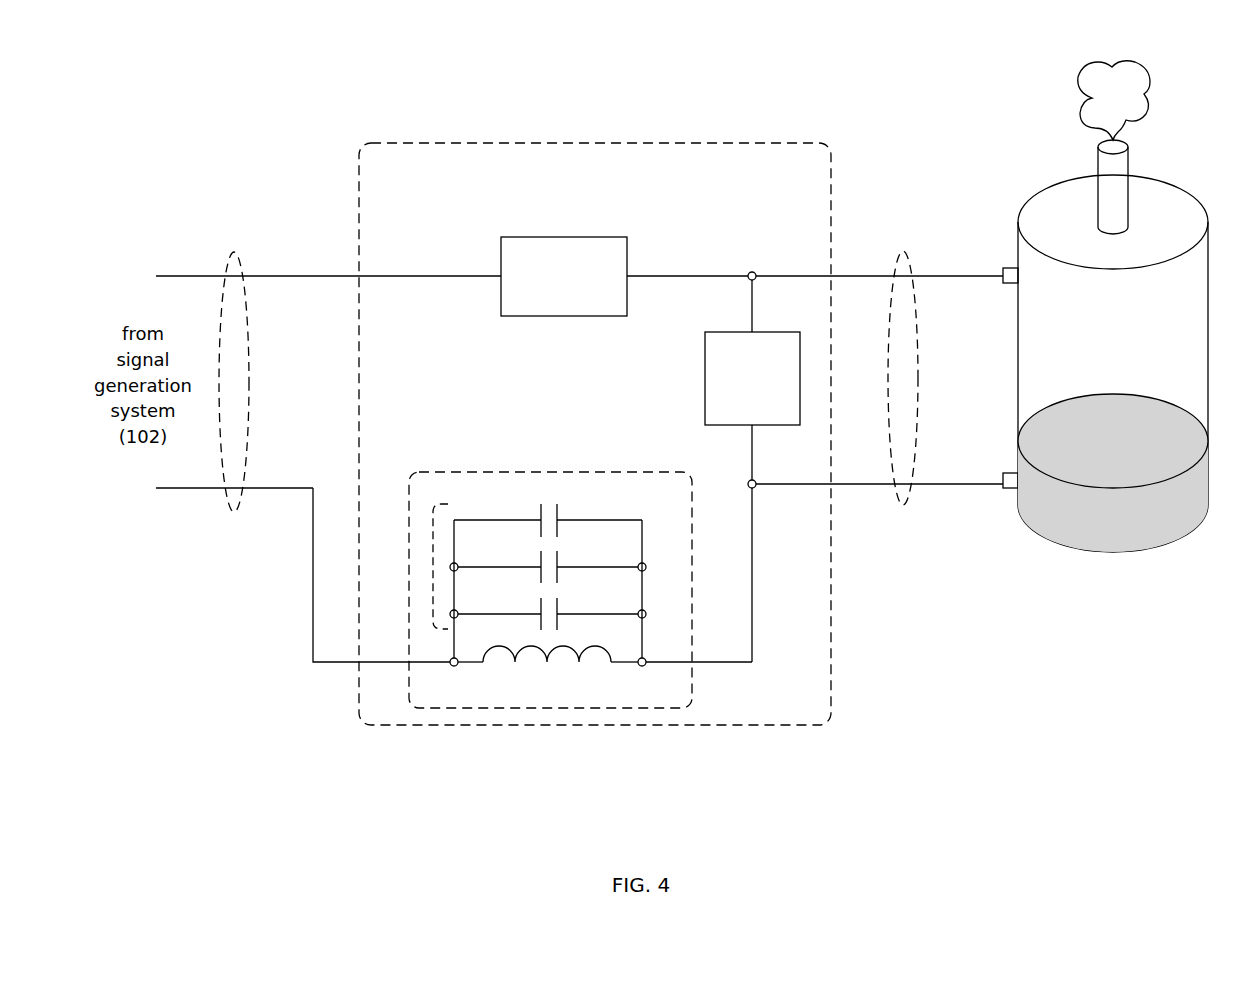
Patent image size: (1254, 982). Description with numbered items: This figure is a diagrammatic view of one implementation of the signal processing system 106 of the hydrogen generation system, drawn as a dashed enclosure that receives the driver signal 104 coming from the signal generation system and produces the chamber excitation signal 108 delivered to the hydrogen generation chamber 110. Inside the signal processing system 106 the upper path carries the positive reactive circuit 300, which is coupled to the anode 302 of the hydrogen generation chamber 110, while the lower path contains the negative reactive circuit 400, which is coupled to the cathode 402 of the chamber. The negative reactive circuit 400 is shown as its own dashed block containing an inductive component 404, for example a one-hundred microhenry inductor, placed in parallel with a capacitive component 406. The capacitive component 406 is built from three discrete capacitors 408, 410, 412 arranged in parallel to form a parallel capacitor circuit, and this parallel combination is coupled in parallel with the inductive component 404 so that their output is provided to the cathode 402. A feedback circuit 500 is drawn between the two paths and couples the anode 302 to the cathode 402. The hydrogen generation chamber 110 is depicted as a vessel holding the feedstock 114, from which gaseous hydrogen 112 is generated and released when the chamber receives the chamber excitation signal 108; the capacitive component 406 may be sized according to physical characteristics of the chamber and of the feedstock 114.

The driver signal 104 is at (230, 510).
The signal processing system 106 is at (831, 173).
The chamber excitation signal 108 is at (905, 252).
The hydrogen generation chamber 110 is at (1113, 346).
The hydrogen 112 is at (1114, 100).
The feedstock 114 is at (1113, 473).
The positive reactive circuit 300 is at (564, 276).
The anode 302 is at (1003, 268).
The negative reactive circuit 400 is at (693, 503).
The cathode 402 is at (1000, 488).
The inductive component 404 is at (615, 662).
The capacitive component 406 is at (428, 567).
The capacitor 408 is at (565, 614).
The capacitor 410 is at (561, 567).
The capacitor 412 is at (561, 520).
The feedback circuit 500 is at (752, 378).